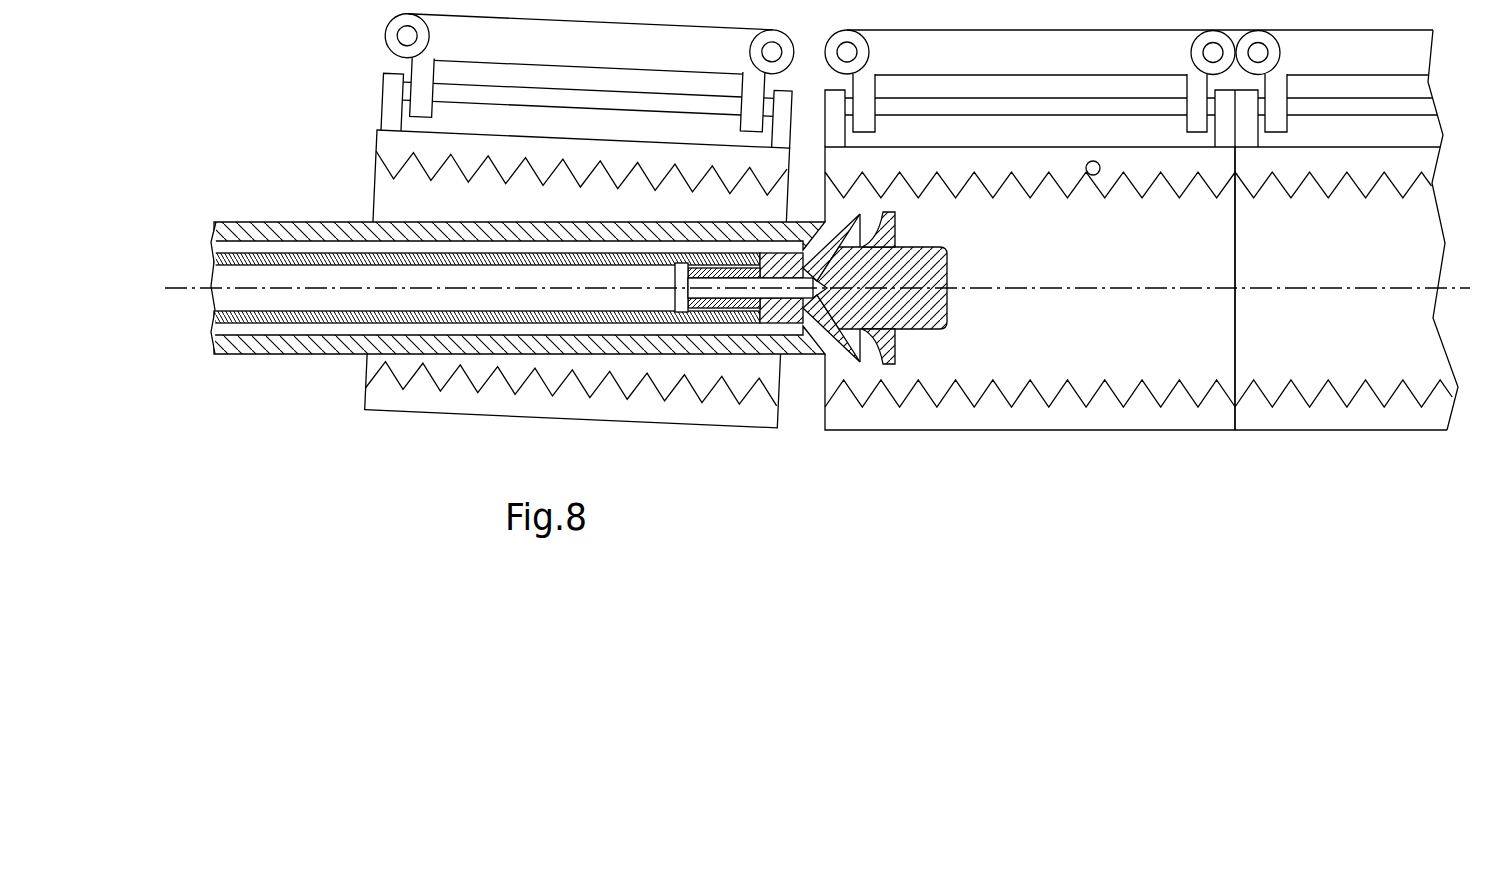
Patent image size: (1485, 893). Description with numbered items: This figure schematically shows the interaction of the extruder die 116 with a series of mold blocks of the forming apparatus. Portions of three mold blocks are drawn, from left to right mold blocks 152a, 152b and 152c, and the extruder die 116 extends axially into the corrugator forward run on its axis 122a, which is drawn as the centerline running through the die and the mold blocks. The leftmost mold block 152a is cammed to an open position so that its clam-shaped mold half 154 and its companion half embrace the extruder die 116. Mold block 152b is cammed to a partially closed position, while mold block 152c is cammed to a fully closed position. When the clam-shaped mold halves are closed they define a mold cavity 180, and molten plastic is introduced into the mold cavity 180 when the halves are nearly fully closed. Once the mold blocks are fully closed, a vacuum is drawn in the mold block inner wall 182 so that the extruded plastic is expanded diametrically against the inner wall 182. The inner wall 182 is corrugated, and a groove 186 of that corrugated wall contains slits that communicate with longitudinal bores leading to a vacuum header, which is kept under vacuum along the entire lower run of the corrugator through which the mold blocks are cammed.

The extruder die 116 is at (282, 360).
The clam-shaped mold half 154 is at (376, 192).
The leftmost mold block 152a is at (531, 279).
The mold block 152b is at (1041, 290).
The mold block 152c is at (1364, 446).
The mold cavity 180 is at (1201, 261).
The mold block inner wall 182 is at (1028, 198).
The groove 186 is at (1090, 176).
The axis of the forward run 122a is at (1042, 288).